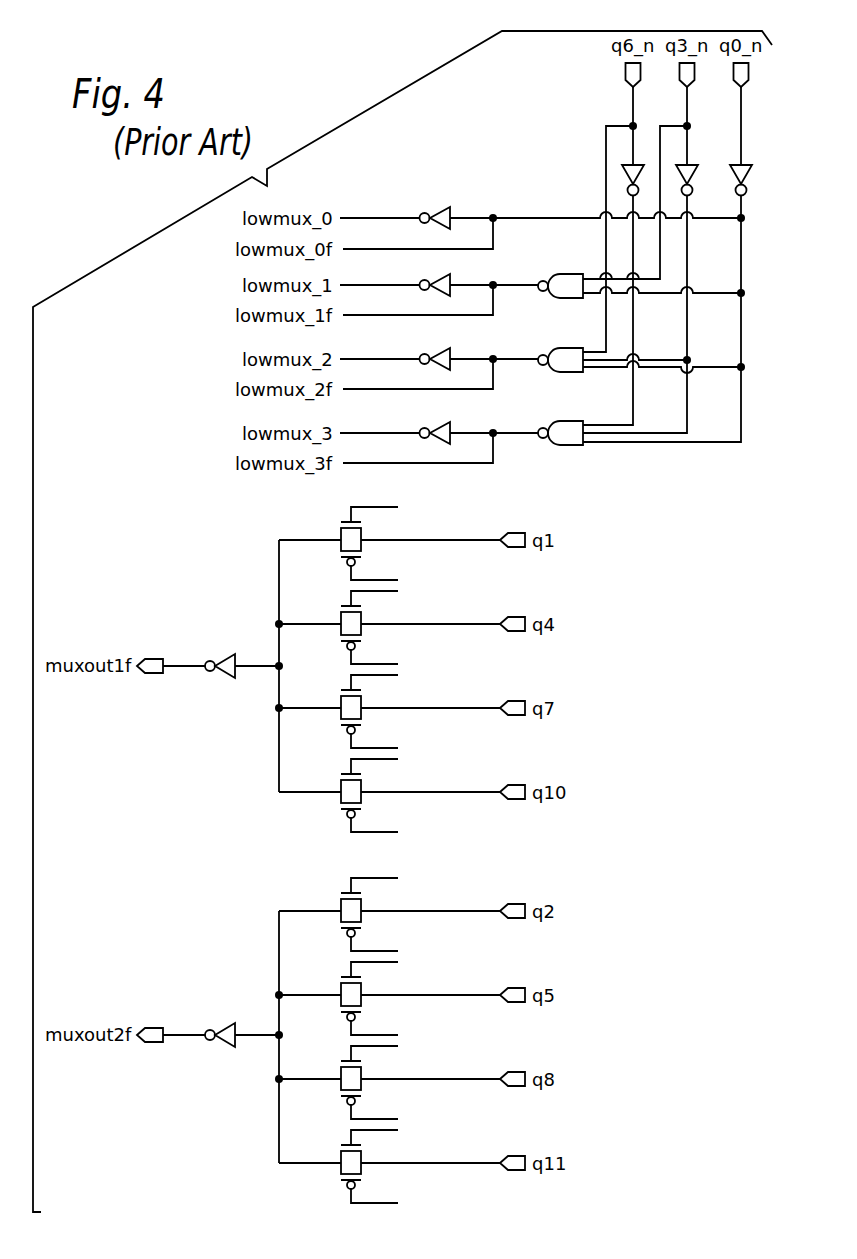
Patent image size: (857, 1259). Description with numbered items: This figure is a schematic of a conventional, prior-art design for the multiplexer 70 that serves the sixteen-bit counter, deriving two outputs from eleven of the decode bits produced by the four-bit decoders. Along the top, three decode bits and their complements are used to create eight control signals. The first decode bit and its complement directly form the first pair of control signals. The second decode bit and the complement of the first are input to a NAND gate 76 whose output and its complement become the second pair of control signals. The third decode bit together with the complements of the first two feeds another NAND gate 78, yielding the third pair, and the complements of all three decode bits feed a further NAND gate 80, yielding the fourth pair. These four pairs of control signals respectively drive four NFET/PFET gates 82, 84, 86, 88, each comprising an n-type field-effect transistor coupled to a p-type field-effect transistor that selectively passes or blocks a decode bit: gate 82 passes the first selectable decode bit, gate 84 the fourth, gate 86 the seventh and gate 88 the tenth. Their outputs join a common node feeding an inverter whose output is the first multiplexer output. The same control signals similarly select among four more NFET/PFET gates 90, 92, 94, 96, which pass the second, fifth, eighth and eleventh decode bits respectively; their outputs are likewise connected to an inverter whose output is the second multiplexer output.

The multiplexer 70 is at (171, 342).
The NAND gate 76 is at (563, 274).
The NAND gate 78 is at (563, 348).
The NAND gate 80 is at (563, 421).
The NFET/PFET gate 82 is at (340, 532).
The NFET/PFET gate 84 is at (340, 616).
The NFET/PFET gate 86 is at (340, 700).
The NFET/PFET gate 88 is at (340, 784).
The NFET/PFET gate 90 is at (340, 903).
The NFET/PFET gate 92 is at (340, 987).
The NFET/PFET gate 94 is at (340, 1071).
The NFET/PFET gate 96 is at (340, 1155).